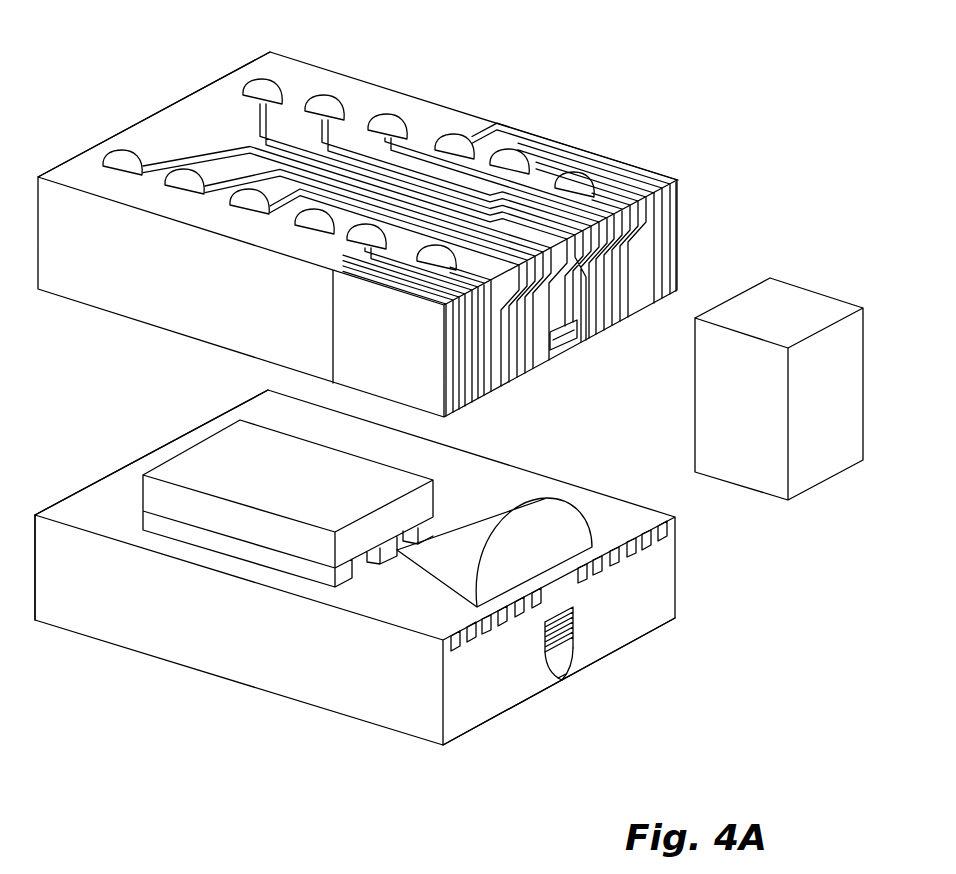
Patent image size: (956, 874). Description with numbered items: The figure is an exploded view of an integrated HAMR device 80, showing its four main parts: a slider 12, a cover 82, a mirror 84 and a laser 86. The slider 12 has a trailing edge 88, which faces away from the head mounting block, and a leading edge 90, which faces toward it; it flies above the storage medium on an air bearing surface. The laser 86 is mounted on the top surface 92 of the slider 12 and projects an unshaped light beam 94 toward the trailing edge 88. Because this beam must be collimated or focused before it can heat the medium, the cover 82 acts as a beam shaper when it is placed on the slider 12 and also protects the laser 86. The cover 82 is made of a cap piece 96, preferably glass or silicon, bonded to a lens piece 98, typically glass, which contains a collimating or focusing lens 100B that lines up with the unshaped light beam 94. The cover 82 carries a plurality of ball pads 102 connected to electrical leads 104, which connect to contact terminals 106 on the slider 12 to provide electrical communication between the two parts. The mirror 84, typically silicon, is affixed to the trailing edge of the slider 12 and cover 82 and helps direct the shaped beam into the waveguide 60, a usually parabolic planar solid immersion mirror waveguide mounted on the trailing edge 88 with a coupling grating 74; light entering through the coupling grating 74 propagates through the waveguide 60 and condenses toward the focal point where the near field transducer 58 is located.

The slider 12 is at (233, 681).
The near field transducer 58 is at (564, 680).
The waveguide 60 is at (575, 650).
The coupling grating 74 is at (577, 620).
The integrated HAMR device 80 is at (738, 192).
The cover 82 is at (437, 91).
The mirror 84 is at (803, 470).
The laser 86 is at (237, 450).
The trailing edge 88 is at (497, 717).
The leading edge 90 is at (35, 540).
The top surface 92 is at (120, 487).
The unshaped light beam 94 is at (458, 537).
The cap piece 96 is at (167, 108).
The lens piece 98 is at (612, 158).
The collimating or focusing lens 100B is at (565, 337).
The ball pads 102 is at (253, 96).
The electrical leads 104 is at (667, 302).
The contact terminals 106 is at (612, 562).